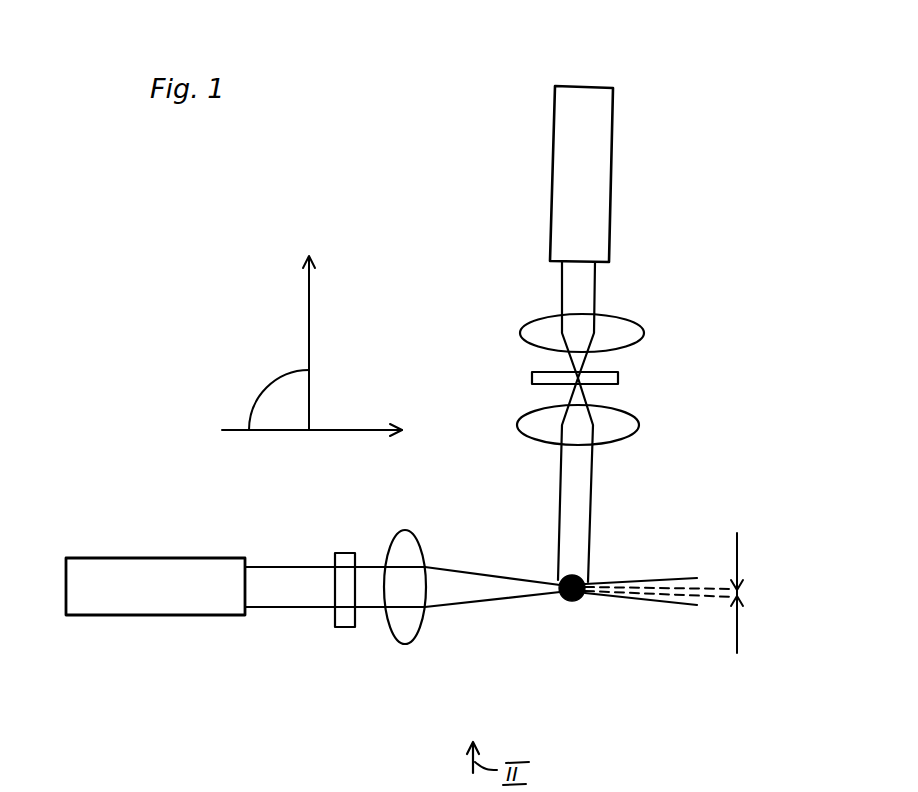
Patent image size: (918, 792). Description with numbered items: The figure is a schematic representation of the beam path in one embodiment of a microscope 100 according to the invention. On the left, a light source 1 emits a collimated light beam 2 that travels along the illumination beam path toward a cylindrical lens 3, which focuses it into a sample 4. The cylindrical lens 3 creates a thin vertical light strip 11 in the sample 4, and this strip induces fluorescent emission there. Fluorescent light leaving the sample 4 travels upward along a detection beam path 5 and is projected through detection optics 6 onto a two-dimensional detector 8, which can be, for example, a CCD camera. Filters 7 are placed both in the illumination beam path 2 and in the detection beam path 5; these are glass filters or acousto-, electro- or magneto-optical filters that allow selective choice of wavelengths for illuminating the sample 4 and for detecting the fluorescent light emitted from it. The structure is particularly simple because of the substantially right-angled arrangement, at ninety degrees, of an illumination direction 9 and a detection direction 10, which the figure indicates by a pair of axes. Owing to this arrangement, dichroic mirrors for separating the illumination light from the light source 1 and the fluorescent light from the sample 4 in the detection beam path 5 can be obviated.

The microscope 100 is at (431, 155).
The light source 1 is at (168, 568).
The collimated light beam 2 is at (292, 577).
The cylindrical lens 3 is at (398, 633).
The sample 4 is at (570, 603).
The detection beam path 5 is at (578, 485).
The detection optics 6 is at (630, 333).
The filters 7 is at (618, 378).
The two-dimensional detector 8 is at (594, 188).
The illumination direction 9 is at (367, 432).
The detection direction 10 is at (311, 310).
The thin vertical light strip 11 is at (737, 555).